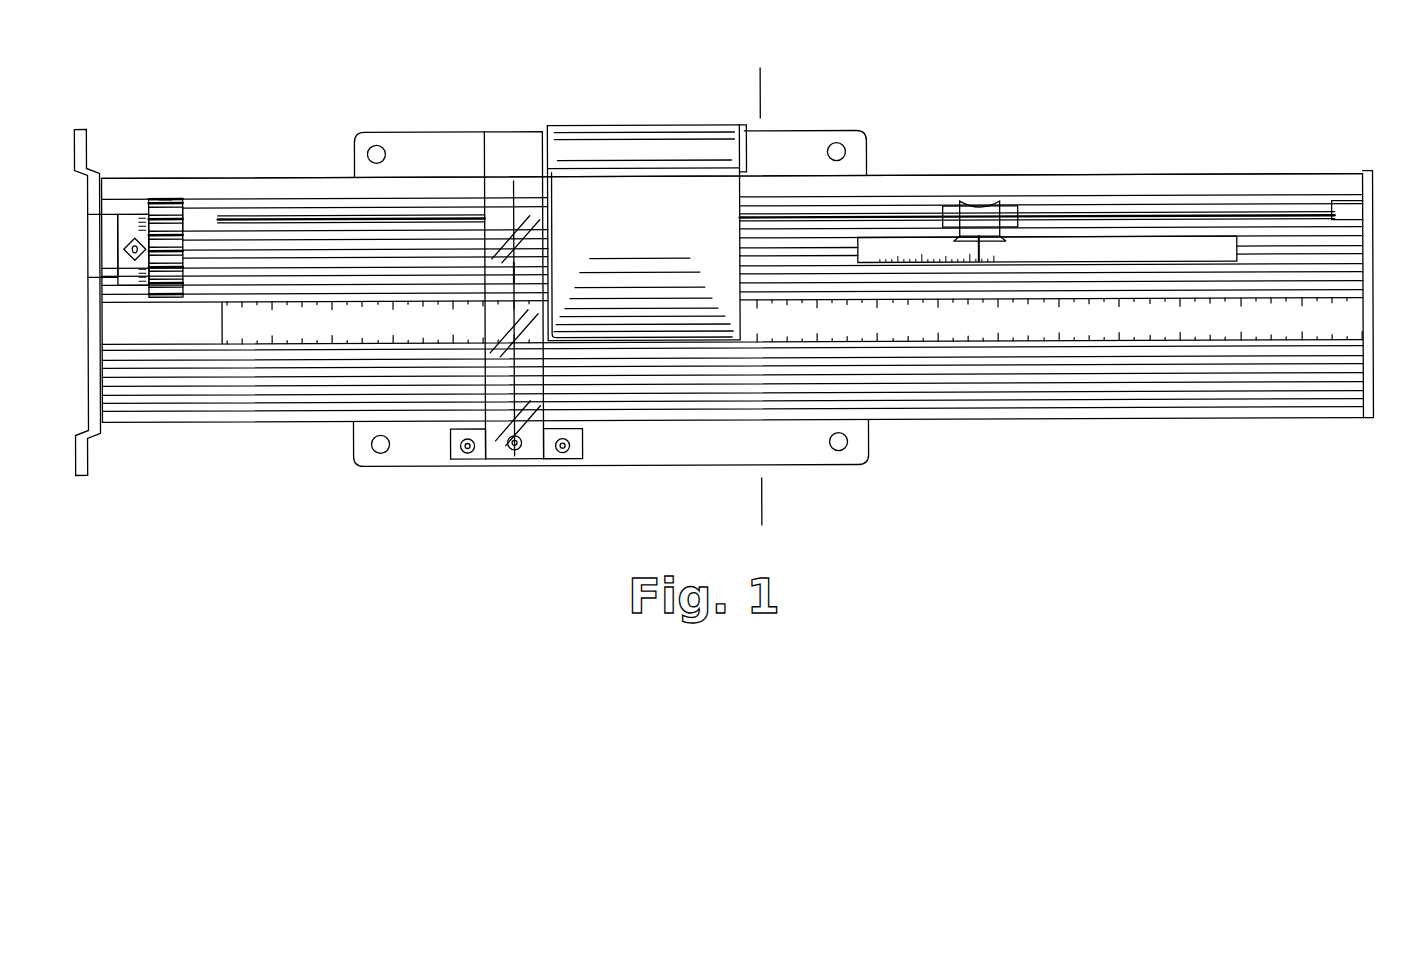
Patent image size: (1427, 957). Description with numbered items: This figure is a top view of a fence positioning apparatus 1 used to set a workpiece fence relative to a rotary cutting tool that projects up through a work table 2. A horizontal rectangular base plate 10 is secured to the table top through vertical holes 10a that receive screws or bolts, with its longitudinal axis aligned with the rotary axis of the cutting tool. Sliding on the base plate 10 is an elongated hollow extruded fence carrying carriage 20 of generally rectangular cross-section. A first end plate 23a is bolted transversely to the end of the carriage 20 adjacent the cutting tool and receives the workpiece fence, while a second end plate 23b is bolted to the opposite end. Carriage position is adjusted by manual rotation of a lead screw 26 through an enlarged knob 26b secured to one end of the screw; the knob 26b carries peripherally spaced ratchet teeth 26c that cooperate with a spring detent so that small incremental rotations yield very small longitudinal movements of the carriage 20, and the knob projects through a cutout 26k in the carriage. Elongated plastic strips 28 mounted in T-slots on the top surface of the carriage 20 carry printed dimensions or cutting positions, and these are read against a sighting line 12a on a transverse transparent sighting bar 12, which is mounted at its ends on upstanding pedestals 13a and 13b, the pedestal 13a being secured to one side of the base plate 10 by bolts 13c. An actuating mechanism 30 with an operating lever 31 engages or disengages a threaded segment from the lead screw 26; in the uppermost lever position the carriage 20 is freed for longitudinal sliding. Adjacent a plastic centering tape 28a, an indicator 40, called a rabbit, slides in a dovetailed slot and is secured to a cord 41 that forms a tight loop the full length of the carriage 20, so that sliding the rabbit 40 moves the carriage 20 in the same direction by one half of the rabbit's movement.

The fence positioning apparatus 1 is at (345, 151).
The work table 2 is at (767, 78).
The base plate 10 is at (645, 480).
The vertical holes 10a is at (373, 146).
The sighting bar 12 is at (485, 190).
The sighting line 12a is at (518, 274).
The pedestal 13a is at (532, 455).
The pedestal 13b is at (516, 132).
The bolts 13c is at (468, 453).
The fence carrying carriage 20 is at (1078, 168).
The first end plate 23a is at (82, 127).
The second end plate 23b is at (1375, 402).
The lead screw 26 is at (138, 265).
The knob 26b is at (160, 197).
The knob knurling 26k is at (172, 199).
The ratchet teeth 26c is at (183, 225).
The elongated plastic strips 28 is at (1352, 318).
The centering tape 28a is at (872, 250).
The actuating mechanism 30 is at (651, 117).
The operating lever 31 is at (652, 224).
The indicator 40 is at (979, 215).
The cord 41 is at (1000, 226).